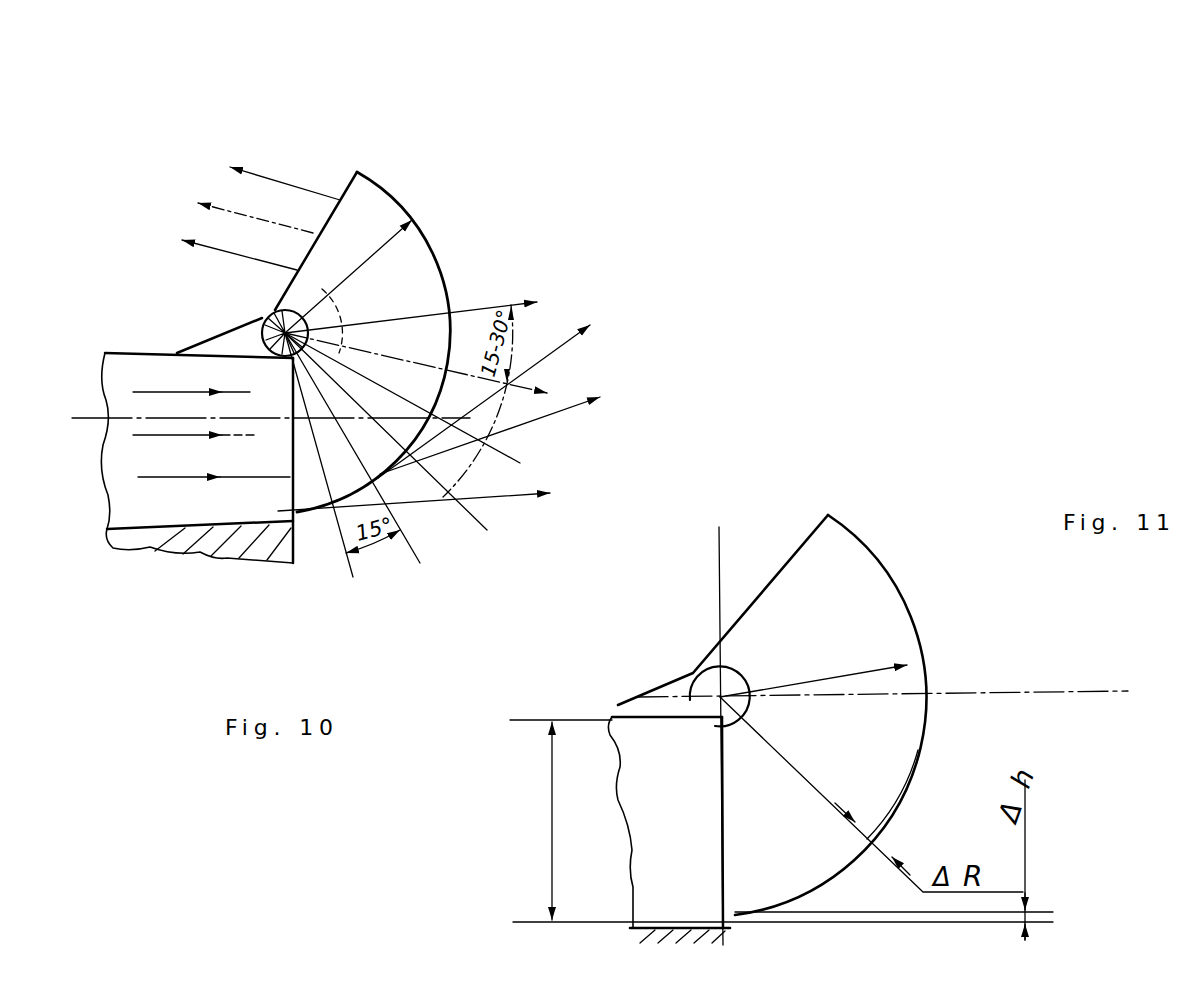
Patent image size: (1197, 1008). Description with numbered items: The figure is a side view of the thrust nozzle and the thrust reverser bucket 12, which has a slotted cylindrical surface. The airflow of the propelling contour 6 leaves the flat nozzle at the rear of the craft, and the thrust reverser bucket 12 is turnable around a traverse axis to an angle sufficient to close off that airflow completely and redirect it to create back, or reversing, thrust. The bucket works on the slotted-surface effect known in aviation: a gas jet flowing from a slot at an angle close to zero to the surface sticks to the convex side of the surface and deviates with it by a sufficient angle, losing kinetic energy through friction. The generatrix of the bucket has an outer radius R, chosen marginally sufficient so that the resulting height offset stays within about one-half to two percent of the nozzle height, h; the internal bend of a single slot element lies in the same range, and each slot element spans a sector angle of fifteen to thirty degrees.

In FIG. 10, the thrust reverser bucket 12 is at (363, 197).
In FIG. 10, the propelling contour 6 is at (180, 393).
In FIG. 10, the outer radius of the reverser bucket generatrix R is at (412, 220).
In FIG. 11, the outer radius of the reverser bucket generatrix R is at (1087, 653).
In FIG. 11, the height h is at (532, 821).